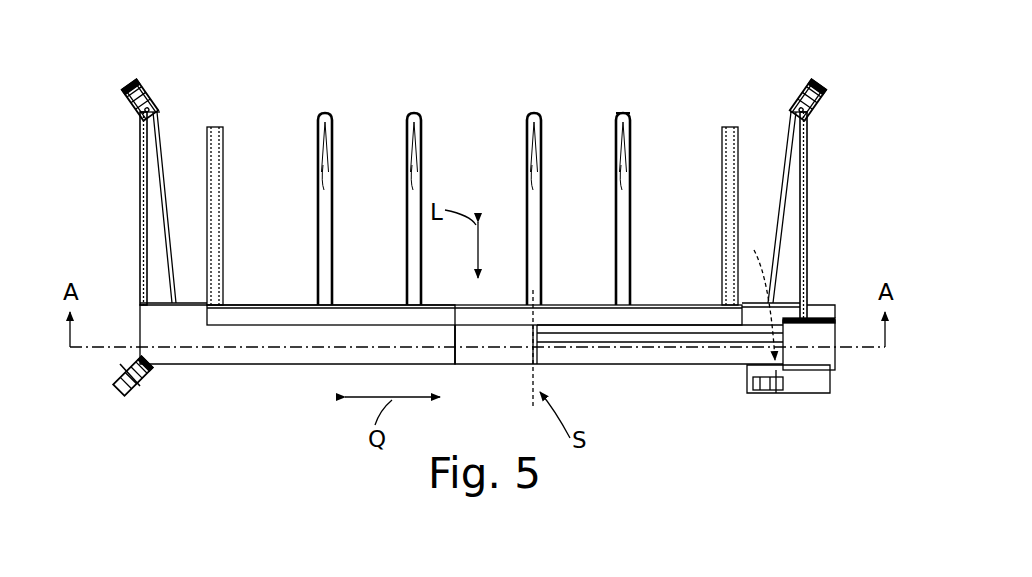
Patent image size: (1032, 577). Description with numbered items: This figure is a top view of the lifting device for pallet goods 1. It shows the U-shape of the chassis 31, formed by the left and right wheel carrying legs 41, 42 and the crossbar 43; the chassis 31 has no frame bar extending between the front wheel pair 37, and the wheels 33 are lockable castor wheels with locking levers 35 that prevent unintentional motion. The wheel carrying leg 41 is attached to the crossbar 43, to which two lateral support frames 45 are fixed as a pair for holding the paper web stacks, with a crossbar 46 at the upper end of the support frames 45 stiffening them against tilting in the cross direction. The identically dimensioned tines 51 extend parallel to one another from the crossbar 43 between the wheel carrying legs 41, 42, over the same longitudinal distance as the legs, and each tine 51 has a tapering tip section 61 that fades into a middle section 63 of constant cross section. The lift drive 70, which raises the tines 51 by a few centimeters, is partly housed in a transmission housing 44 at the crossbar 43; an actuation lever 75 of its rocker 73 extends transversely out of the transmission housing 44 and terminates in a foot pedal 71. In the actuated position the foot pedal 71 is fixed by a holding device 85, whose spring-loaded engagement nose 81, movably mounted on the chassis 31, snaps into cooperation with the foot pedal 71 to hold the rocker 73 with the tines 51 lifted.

The lifting device for pallet goods 1 is at (117, 165).
The chassis 31 is at (812, 228).
The lockable wheels 33 is at (120, 392).
The locking levers 35 is at (150, 395).
The front wheel pair 37 is at (130, 85).
The wheel carrying leg 41 is at (150, 255).
The wheel carrying leg 42 is at (805, 178).
The crossbar 43 is at (235, 355).
The transmission housing 44 is at (476, 370).
The lateral support frames 45 is at (215, 192).
The crossbar 46 is at (262, 320).
The tines 51 is at (408, 160).
The tapering tip section 61 is at (634, 118).
The middle section 63 is at (634, 202).
The lift drive 70 is at (618, 412).
The foot pedal 71 is at (822, 358).
The rocker 73 is at (696, 336).
The actuation lever 75 is at (641, 355).
The engagement nose 81 is at (759, 293).
The holding device 85 is at (832, 305).